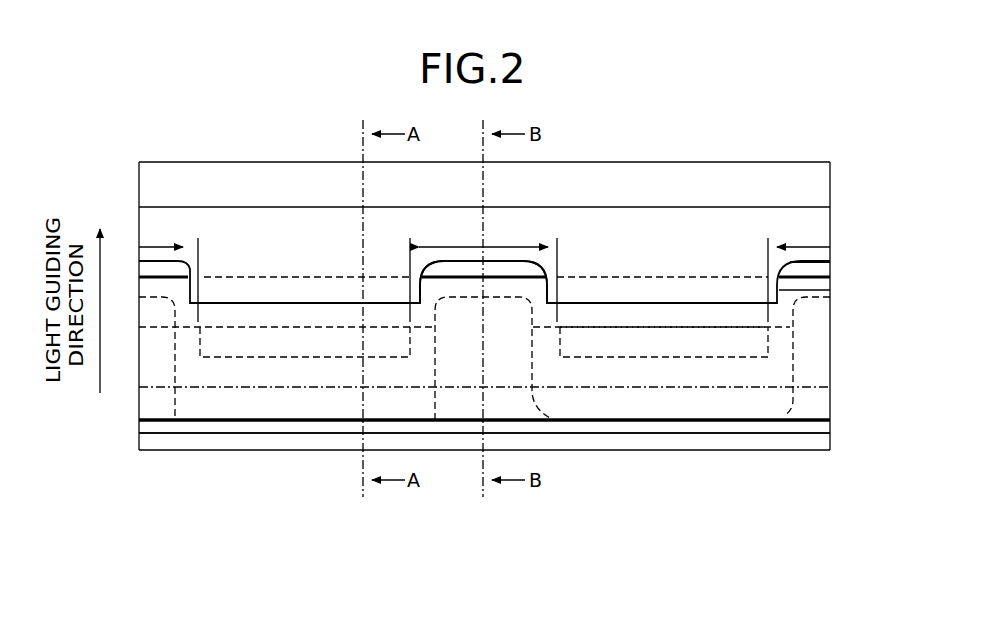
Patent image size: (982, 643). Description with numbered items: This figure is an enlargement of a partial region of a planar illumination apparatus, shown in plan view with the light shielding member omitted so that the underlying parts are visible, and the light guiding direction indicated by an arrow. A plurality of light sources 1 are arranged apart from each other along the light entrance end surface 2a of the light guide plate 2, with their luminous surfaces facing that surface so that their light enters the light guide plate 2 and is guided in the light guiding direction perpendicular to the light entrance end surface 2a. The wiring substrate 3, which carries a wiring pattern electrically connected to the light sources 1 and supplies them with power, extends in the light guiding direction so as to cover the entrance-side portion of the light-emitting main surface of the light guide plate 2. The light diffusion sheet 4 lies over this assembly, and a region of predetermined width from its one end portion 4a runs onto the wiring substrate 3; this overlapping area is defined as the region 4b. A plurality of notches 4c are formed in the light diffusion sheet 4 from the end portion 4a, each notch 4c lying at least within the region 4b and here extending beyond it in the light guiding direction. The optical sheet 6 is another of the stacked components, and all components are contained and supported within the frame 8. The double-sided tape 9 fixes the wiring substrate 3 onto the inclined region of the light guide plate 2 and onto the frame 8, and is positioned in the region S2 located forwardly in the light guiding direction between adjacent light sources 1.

The light sources 1 is at (270, 357).
The light guide plate 2 is at (420, 342).
The light entrance end surface 2a is at (650, 327).
The wiring substrate 3 is at (780, 420).
The light diffusion sheet 4 is at (831, 232).
The end portion 4a is at (748, 303).
The region 4b is at (831, 287).
The notches 4c is at (826, 265).
The optical sheet 6 is at (831, 190).
The frame 8 is at (831, 443).
The double-sided tape 9 is at (175, 420).
The region S2 is at (190, 246).